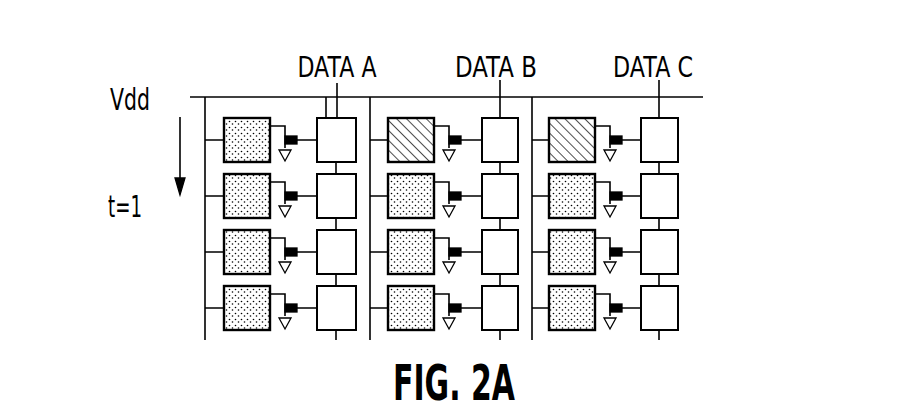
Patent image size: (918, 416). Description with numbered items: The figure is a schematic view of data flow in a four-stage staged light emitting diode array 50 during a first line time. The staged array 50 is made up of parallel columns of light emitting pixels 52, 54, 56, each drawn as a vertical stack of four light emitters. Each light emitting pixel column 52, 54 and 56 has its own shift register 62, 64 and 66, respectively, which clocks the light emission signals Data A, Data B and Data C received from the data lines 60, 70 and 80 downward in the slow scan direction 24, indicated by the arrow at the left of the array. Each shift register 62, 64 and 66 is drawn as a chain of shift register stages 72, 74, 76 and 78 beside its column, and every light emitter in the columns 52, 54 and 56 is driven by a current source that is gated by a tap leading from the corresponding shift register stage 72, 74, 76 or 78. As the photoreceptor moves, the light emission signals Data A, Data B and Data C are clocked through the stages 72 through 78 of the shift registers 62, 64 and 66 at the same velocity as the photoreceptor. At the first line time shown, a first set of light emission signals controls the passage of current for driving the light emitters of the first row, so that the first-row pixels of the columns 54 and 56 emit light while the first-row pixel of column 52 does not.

The slow scan direction 24 is at (178, 167).
The staged light emitting diode array 50 is at (719, 78).
The light emitting pixel column 52 is at (257, 117).
The light emitting pixel column 54 is at (418, 117).
The light emitting pixel column 56 is at (570, 117).
The data line 60 is at (340, 90).
The shift register 62 is at (326, 97).
The shift register 64 is at (492, 118).
The shift register 66 is at (645, 118).
The data line 70 is at (507, 91).
The shift register stage 72 is at (665, 139).
The shift register stage 74 is at (662, 192).
The shift register stage 76 is at (660, 250).
The shift register stage 78 is at (658, 306).
The data line 80 is at (663, 90).